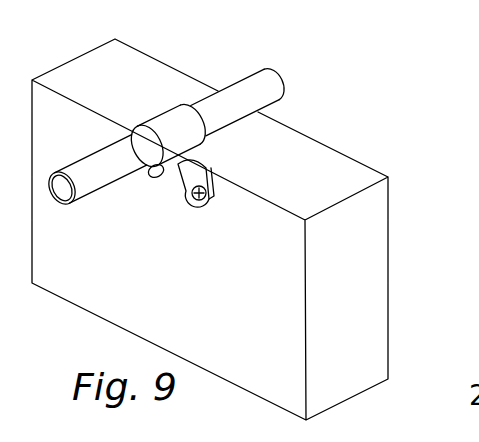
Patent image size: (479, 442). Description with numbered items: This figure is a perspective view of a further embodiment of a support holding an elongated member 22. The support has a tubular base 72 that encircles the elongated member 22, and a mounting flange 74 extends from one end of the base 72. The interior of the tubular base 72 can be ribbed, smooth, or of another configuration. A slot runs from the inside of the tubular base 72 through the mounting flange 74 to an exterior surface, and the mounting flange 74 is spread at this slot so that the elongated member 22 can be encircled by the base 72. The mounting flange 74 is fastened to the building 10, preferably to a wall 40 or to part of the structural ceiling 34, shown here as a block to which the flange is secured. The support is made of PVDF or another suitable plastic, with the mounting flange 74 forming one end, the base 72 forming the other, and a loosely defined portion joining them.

The building 10 is at (240, 229).
The wall 40 is at (240, 229).
The structural ceiling 34 is at (262, 212).
The elongated member 22 is at (273, 88).
The tubular base 72 is at (168, 115).
The mounting flange 74 is at (183, 188).